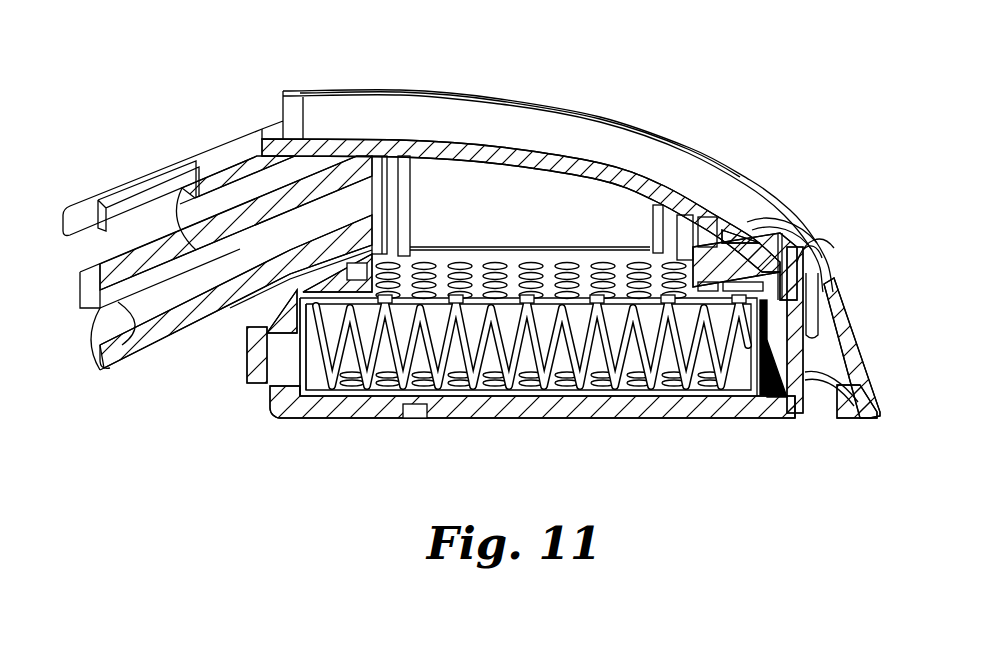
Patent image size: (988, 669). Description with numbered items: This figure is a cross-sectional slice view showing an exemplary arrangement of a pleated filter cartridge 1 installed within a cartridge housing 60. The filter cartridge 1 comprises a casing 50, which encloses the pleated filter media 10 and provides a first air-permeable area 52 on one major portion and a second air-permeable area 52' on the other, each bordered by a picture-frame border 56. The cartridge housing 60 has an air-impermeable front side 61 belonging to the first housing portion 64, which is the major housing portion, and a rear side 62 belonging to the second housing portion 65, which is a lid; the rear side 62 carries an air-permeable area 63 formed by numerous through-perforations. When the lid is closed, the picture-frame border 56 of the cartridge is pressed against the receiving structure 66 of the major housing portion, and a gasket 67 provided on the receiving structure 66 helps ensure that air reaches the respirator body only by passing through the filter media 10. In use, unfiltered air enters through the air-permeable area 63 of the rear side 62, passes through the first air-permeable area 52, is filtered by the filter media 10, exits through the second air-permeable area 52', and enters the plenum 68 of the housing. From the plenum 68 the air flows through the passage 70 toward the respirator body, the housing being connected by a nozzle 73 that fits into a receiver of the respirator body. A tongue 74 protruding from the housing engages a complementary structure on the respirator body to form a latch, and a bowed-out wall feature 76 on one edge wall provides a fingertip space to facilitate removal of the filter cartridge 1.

The filter cartridge 1 is at (290, 377).
The pleated filter media 10 is at (378, 390).
The casing 50 is at (583, 263).
The first air-permeable area 52 is at (532, 379).
The second air-permeable area 52' is at (513, 248).
The picture-frame border 56 is at (760, 303).
The cartridge housing 60 is at (690, 148).
The front side 61 is at (487, 84).
The rear side 62 is at (440, 474).
The air-permeable area 63 is at (488, 410).
The first housing portion 64 is at (597, 138).
The second housing portion 65 is at (732, 413).
The receiving structure 66 is at (747, 293).
The gasket 67 is at (770, 296).
The plenum 68 is at (528, 217).
The passage 70 is at (150, 322).
The nozzle 73 is at (80, 292).
The tongue 74 is at (75, 208).
The bowed-out wall feature 76 is at (860, 387).